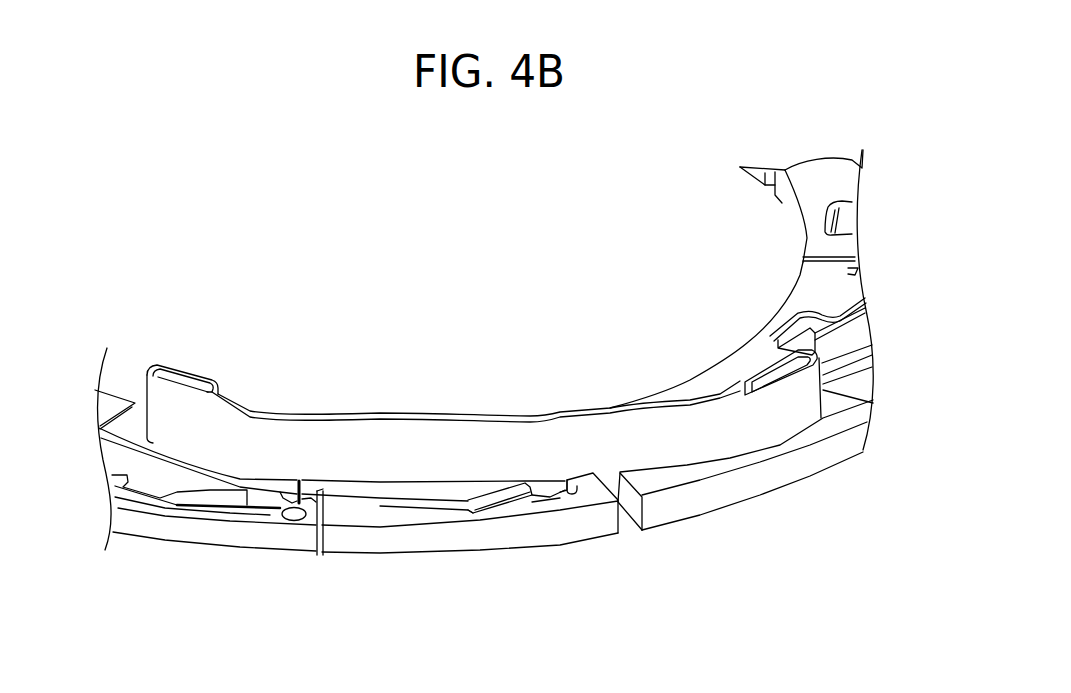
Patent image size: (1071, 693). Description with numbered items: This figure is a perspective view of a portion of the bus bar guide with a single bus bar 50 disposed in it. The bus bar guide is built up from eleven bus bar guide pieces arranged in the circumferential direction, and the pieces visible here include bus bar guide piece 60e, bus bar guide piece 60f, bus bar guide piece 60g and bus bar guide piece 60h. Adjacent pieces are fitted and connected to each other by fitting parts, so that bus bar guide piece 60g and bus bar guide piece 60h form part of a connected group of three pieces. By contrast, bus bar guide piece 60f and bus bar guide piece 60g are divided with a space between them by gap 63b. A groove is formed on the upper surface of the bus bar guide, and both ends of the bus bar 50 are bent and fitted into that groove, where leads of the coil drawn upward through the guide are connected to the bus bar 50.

The bus bar 50 is at (305, 440).
The bus bar guide piece 60e is at (812, 197).
The bus bar guide piece 60f is at (692, 502).
The bus bar guide piece 60g is at (445, 542).
The bus bar guide piece 60h is at (110, 405).
The gap 63b is at (628, 537).